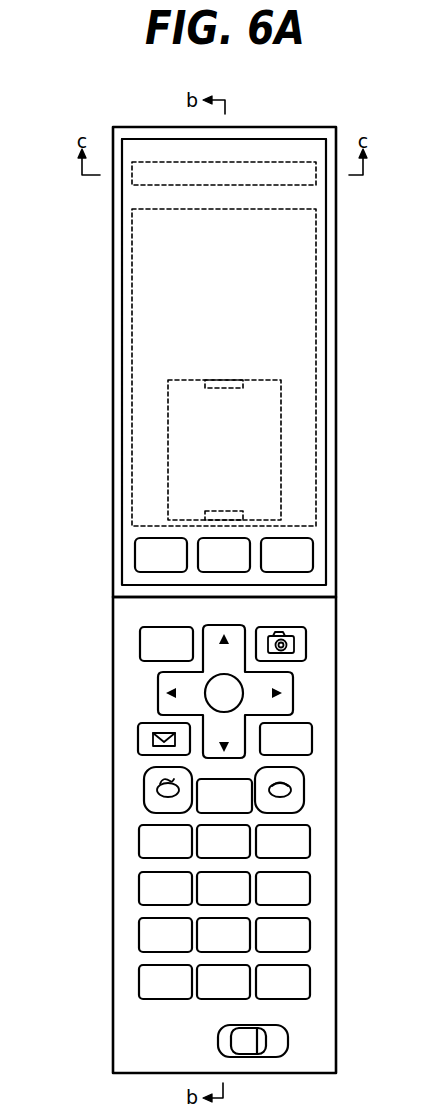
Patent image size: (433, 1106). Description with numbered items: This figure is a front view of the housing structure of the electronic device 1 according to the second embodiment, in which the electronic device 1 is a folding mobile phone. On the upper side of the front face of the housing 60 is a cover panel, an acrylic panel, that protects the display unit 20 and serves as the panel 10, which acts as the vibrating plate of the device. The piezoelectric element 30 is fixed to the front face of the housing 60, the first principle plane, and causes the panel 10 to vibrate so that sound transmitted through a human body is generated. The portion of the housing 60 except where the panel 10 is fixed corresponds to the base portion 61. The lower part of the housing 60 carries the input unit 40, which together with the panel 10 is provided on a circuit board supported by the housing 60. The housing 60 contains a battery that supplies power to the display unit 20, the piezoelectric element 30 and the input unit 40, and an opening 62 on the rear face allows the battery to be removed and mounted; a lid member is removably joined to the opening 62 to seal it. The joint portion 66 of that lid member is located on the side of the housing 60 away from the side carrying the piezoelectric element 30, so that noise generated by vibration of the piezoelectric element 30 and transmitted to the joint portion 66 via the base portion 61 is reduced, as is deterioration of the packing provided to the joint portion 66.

The electronic device 1 is at (184, 123).
The panel 10 is at (246, 138).
The display unit 20 is at (316, 305).
The piezoelectric element 30 is at (316, 185).
The input unit 40 is at (297, 556).
The housing 60 is at (113, 270).
The base portion 61 is at (284, 132).
The opening 62 is at (168, 441).
The joint portion 66 is at (222, 385).